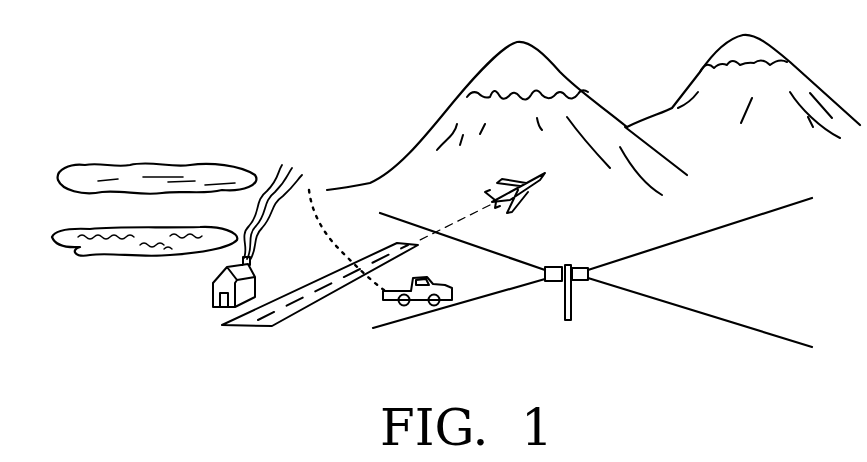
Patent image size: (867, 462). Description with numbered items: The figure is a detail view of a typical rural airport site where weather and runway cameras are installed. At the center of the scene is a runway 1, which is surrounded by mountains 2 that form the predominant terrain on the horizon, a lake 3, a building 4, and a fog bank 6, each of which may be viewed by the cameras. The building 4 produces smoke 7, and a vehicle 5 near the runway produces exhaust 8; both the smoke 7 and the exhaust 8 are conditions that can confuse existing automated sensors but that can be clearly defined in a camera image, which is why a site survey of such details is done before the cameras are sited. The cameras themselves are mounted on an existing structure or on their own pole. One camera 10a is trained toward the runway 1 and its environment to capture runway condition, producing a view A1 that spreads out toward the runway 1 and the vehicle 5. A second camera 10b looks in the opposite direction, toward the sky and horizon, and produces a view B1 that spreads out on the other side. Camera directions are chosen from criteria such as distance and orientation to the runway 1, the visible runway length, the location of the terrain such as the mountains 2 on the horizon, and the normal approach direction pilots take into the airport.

The runway 1 is at (285, 313).
The mountains 2 is at (680, 90).
The lake 3 is at (124, 252).
The building 4 is at (213, 298).
The vehicle 5 is at (435, 286).
The fog bank 6 is at (163, 162).
The smoke 7 is at (270, 172).
The exhaust 8 is at (328, 246).
The camera 10a is at (550, 282).
The second camera 10b is at (583, 281).
The view A1 is at (459, 270).
The view B1 is at (700, 272).